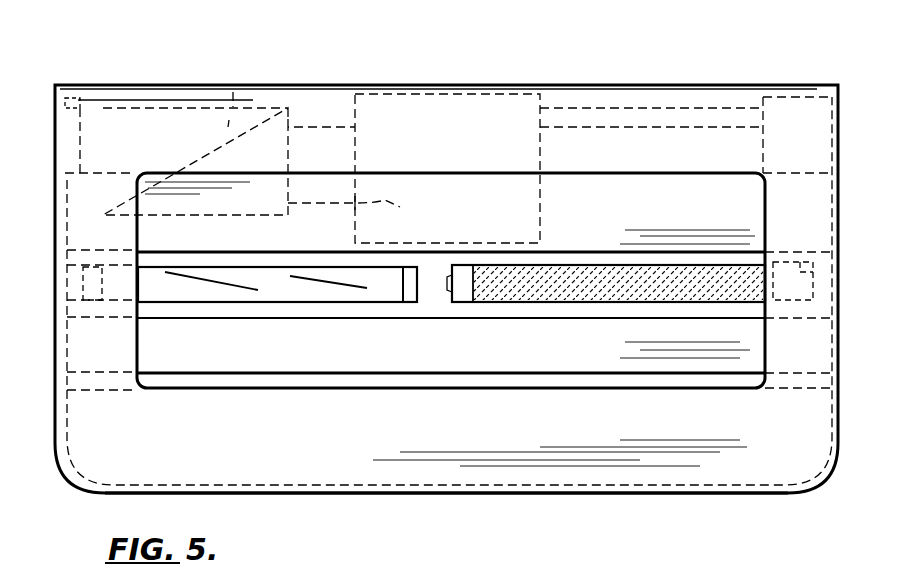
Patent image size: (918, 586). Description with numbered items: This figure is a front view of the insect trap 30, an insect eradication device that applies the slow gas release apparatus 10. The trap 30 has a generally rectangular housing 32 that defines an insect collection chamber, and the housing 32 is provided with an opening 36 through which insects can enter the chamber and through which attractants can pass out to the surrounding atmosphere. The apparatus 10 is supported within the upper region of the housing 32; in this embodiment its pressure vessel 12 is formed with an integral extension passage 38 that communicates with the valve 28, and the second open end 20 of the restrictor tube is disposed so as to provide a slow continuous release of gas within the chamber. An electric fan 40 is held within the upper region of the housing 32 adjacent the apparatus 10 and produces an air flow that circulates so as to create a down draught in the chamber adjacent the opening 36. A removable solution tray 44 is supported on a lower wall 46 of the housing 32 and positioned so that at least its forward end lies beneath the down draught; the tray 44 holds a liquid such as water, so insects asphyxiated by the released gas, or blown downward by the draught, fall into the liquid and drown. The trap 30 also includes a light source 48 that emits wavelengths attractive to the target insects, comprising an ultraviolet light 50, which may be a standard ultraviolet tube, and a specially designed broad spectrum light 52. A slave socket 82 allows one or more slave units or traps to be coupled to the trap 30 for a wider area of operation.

The apparatus 10 is at (205, 150).
The pressure vessel 12 is at (237, 84).
The second open end 20 is at (362, 206).
The valve 28 is at (802, 133).
The insect trap 30 is at (414, 78).
The housing 32 is at (627, 84).
The opening 36 is at (323, 357).
The integral extension passage 38 is at (660, 122).
The electric fan 40 is at (442, 133).
The solution tray 44 is at (623, 458).
The lower wall 46 is at (692, 493).
The light source 48 is at (475, 347).
The ultraviolet light 50 is at (358, 290).
The broad spectrum light 52 is at (527, 290).
The slave socket 82 is at (68, 95).